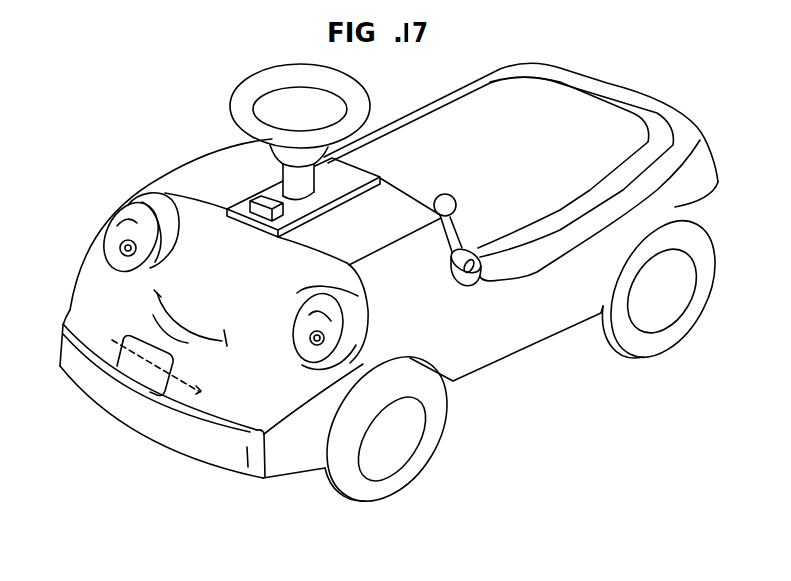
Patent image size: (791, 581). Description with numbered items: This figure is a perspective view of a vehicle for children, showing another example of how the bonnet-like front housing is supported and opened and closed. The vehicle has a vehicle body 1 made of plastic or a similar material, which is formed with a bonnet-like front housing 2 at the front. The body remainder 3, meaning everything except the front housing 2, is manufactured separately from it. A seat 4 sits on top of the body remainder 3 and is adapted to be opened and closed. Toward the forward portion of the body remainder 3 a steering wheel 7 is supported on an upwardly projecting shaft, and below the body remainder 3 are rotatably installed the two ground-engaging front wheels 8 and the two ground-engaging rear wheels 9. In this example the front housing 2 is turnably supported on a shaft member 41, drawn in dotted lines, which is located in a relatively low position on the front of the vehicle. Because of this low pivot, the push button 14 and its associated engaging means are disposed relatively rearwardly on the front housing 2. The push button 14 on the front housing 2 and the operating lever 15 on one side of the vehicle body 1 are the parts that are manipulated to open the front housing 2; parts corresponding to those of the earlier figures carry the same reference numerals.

The vehicle body 1 is at (719, 177).
The bonnet-like front housing 2 is at (95, 267).
The body remainder 3 is at (528, 341).
The seat 4 is at (484, 107).
The steering wheel 7 is at (248, 94).
The front wheels 8 is at (383, 492).
The rear wheels 9 is at (662, 345).
The push button 14 is at (257, 197).
The operating lever 15 is at (445, 205).
The shaft member 41 is at (180, 384).